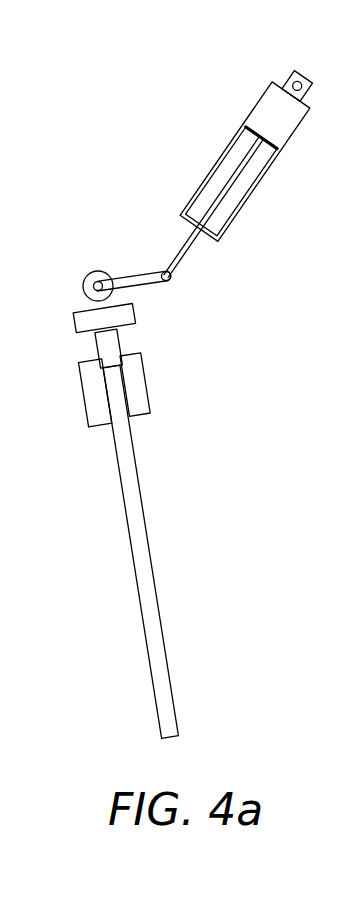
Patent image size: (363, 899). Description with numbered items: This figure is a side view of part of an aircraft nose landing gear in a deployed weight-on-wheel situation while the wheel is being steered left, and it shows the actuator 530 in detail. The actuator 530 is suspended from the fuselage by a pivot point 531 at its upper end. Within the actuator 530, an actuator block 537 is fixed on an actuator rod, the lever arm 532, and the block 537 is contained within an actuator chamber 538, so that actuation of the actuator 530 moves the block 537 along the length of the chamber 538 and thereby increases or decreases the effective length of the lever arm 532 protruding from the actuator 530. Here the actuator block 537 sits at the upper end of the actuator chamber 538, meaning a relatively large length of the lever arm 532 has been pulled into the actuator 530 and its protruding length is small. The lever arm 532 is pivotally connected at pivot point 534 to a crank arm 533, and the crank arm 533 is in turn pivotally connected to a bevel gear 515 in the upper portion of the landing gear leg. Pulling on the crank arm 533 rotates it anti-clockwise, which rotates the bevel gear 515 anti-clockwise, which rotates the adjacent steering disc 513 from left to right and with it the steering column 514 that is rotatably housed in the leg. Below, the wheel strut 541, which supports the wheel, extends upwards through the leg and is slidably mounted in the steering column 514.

The steering disc 513 is at (130, 315).
The steering column 514 is at (140, 387).
The bevel gear 515 is at (82, 290).
The actuator 530 is at (292, 123).
The pivot point 531 is at (303, 85).
The lever arm 532 is at (190, 245).
The crank arm 533 is at (128, 277).
The pivot point 534 is at (172, 279).
The actuator block 537 is at (262, 157).
The actuator chamber 538 is at (228, 208).
The wheel strut 541 is at (145, 563).